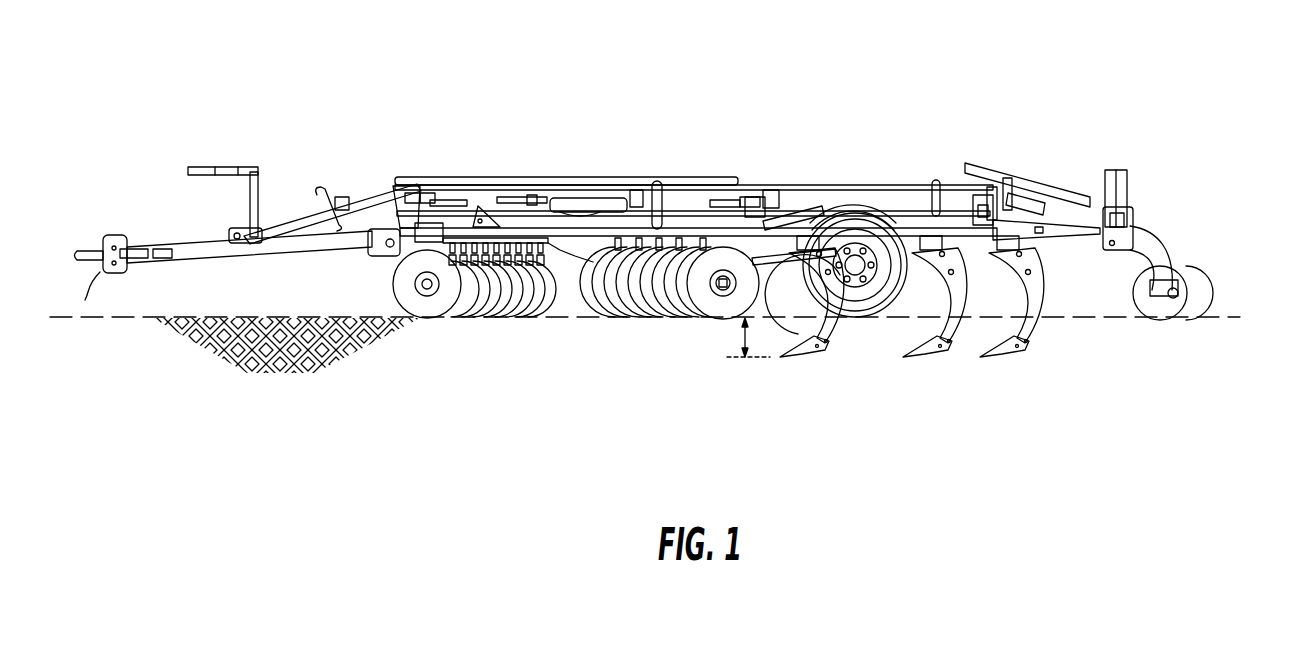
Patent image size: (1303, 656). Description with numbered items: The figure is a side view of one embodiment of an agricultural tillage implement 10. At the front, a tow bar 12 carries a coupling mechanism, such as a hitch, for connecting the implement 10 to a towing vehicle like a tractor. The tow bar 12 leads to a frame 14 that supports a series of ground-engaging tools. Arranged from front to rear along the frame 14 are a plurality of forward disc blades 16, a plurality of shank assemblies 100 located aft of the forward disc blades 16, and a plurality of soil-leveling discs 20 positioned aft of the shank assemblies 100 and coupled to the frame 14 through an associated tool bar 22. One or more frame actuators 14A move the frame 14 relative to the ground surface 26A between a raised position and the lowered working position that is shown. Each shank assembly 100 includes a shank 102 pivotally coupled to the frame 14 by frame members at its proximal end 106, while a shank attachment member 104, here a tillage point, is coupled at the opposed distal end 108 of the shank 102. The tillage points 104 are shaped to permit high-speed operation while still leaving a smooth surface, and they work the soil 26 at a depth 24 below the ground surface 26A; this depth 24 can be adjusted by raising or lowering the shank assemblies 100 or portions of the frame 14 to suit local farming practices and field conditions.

The tillage implement 10 is at (401, 111).
The tow bar 12 is at (282, 264).
The frame 14 is at (893, 220).
The frame actuator 14A is at (792, 210).
The forward disc blades 16 is at (478, 338).
The soil-leveling discs 20 is at (1173, 334).
The tool bar 22 is at (1103, 240).
The depth 24 is at (740, 338).
The soil 26 is at (295, 354).
The ground surface 26A is at (1240, 315).
The shank assembly 100 is at (926, 338).
The shank 102 is at (854, 313).
The shank attachment member 104 is at (800, 358).
The proximal end 106 is at (840, 208).
The distal end 108 is at (834, 336).